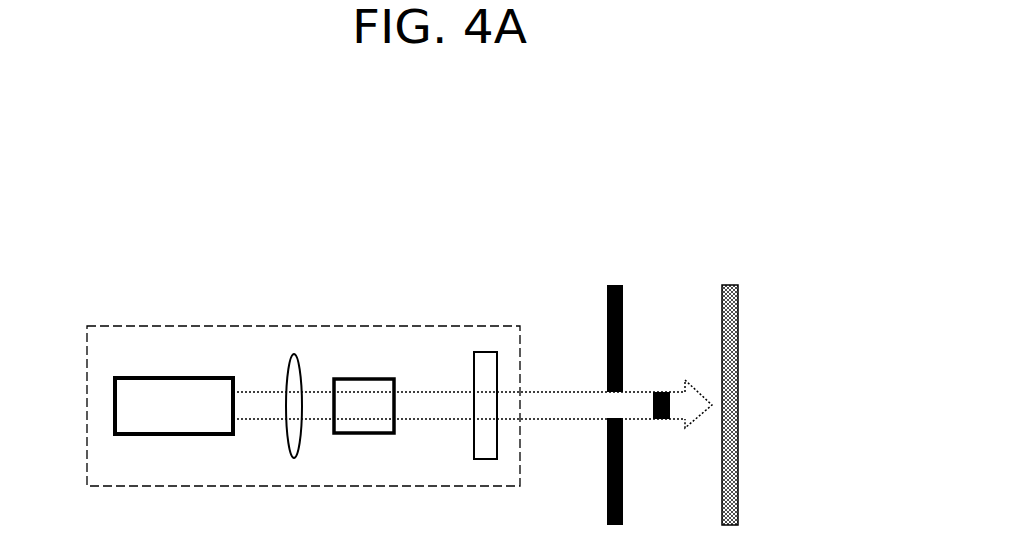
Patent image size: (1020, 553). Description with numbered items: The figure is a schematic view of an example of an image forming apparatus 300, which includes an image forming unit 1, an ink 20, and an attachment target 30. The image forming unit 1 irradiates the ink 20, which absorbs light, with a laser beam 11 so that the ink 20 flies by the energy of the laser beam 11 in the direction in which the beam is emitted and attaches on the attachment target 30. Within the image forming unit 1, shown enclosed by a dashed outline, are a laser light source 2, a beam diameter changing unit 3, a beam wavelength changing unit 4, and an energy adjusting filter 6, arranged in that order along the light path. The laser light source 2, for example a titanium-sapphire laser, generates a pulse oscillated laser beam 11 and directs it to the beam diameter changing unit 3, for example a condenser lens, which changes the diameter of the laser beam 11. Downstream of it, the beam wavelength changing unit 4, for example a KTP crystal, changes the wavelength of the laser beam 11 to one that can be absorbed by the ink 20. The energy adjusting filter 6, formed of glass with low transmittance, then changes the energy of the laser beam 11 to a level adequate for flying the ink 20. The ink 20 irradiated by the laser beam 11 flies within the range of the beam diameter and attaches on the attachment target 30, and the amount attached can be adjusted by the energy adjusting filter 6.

The image forming apparatus 300 is at (648, 160).
The image forming unit 1 is at (147, 326).
The laser light source 2 is at (183, 378).
The beam diameter changing unit 3 is at (295, 354).
The beam wavelength changing unit 4 is at (370, 379).
The energy adjusting filter 6 is at (492, 352).
The laser beam 11 is at (260, 422).
The ink 20 is at (619, 285).
The attachment target 30 is at (732, 285).